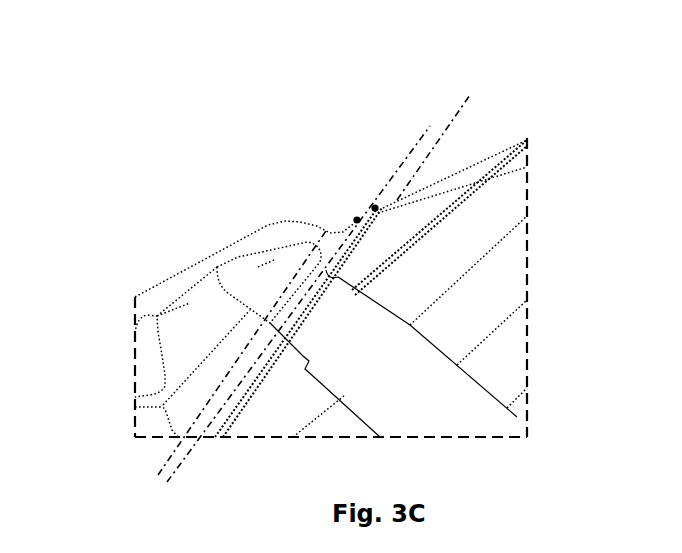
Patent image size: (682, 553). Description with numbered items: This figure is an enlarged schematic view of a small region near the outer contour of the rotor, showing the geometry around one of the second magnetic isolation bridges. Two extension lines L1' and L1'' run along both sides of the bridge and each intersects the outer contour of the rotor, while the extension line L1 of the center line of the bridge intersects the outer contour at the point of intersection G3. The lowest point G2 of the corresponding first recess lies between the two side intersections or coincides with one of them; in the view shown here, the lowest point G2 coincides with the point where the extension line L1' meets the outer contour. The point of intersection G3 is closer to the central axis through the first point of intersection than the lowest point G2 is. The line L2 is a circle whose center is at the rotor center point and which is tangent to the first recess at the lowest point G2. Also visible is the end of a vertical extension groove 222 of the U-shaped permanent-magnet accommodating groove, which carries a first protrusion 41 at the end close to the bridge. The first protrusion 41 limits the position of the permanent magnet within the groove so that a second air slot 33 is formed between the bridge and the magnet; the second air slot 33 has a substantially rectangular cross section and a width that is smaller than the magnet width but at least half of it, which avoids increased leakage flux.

The line L2 is at (272, 258).
The lowest point G2 is at (353, 216).
The point of intersection G3 is at (373, 205).
The extension line L1 is at (433, 110).
The extension line L1' is at (212, 377).
The extension line L1'' is at (294, 326).
The second air slot 33 is at (318, 313).
The first protrusion 41 is at (305, 362).
The vertical extension groove 222 is at (360, 390).